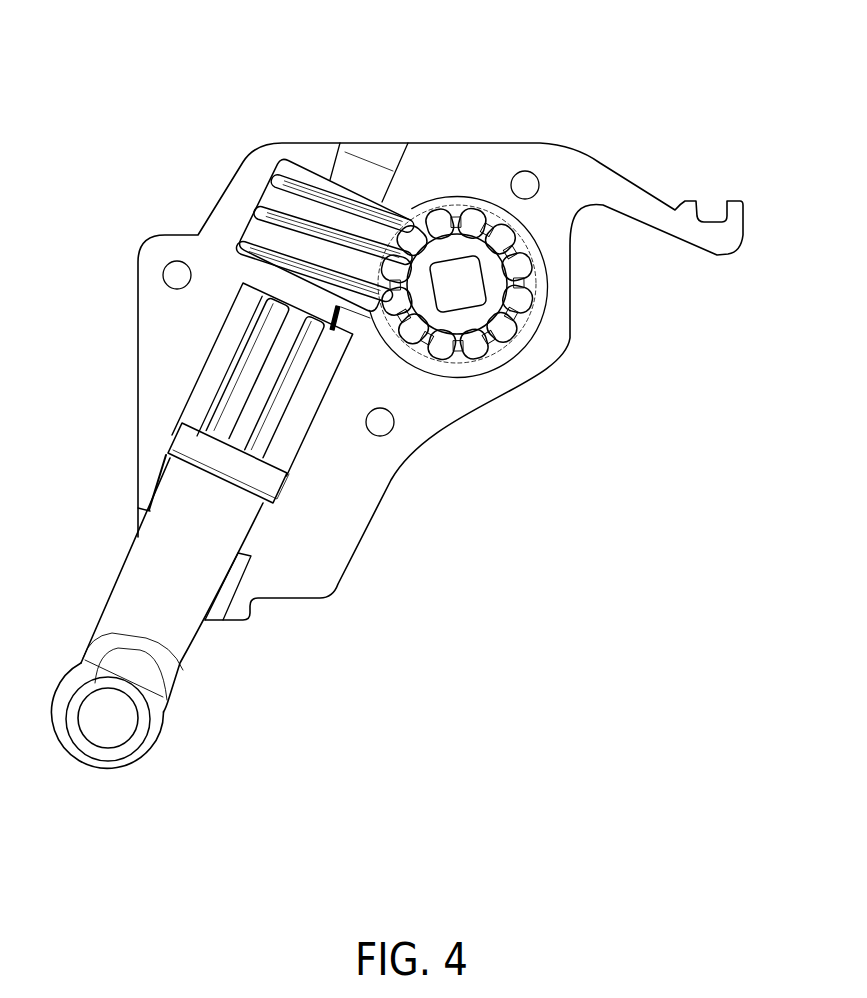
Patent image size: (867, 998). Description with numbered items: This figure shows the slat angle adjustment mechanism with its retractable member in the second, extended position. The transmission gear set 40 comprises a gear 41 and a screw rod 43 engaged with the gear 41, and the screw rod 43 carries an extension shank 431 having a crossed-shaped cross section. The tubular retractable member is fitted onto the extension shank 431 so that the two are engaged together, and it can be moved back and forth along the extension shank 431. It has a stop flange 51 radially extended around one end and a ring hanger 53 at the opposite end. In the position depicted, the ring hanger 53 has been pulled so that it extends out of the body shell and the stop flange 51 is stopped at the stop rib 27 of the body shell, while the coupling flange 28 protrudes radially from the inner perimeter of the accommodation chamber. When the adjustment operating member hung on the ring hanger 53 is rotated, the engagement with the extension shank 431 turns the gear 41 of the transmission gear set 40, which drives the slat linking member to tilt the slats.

The transmission gear set 40 is at (497, 58).
The screw rod 43 is at (339, 195).
The gear 41 is at (473, 212).
The extension shank 431 is at (246, 341).
The stop flange 51 is at (183, 438).
The stop rib 27 is at (167, 455).
The coupling flange 28 is at (338, 332).
The ring hanger 53 is at (134, 745).